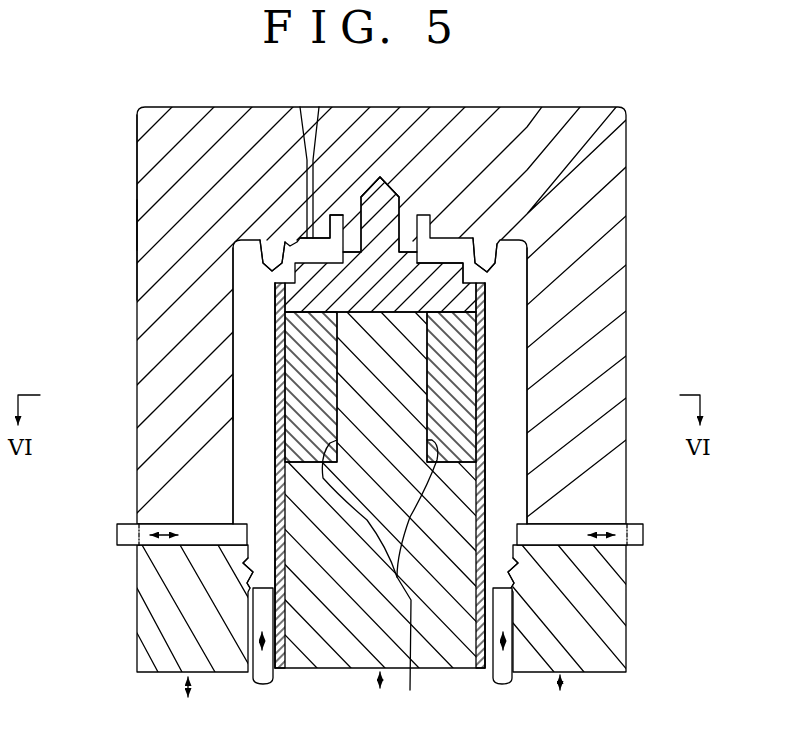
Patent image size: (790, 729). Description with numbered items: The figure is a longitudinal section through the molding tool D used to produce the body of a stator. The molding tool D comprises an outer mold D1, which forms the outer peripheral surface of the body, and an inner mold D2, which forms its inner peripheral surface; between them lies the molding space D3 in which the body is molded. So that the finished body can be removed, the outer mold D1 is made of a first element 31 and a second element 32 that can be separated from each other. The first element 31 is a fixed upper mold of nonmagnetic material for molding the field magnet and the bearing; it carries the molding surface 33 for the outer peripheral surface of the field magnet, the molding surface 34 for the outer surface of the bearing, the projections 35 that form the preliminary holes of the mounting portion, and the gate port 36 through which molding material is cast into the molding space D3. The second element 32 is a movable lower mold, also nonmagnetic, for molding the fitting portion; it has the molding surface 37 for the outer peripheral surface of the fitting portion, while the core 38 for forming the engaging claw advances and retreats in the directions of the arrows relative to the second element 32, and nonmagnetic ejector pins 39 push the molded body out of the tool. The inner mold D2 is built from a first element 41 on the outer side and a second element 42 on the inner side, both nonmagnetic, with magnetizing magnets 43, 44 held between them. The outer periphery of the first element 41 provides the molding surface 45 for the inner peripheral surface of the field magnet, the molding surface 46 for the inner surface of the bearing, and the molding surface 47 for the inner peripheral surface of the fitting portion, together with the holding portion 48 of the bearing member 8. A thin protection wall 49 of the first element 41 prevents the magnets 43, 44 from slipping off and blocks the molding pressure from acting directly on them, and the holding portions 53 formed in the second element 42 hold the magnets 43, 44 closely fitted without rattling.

The bearing member 8 is at (370, 190).
The first element 31 is at (140, 483).
The second element 32 is at (137, 610).
The molding surface 33 is at (237, 353).
The molding surface 34 is at (278, 252).
The projections 35 is at (267, 247).
The gate port 36 is at (309, 108).
The molding surface 37 is at (247, 580).
The core 38 is at (117, 535).
The ejector pins 39 is at (262, 684).
The first element 41 is at (281, 670).
The second element 42 is at (333, 666).
The magnetizing magnet 43 is at (283, 449).
The magnetizing magnet 44 is at (472, 448).
The molding surface 45 is at (273, 377).
The molding surface 46 is at (447, 258).
The molding surface 47 is at (250, 634).
The holding portion 48 is at (392, 192).
The protection wall 49 is at (480, 360).
The holding portions 53 is at (380, 577).
The molding tool D is at (110, 180).
The outer mold D1 is at (135, 245).
The inner mold D2 is at (275, 443).
The molding space D3 is at (250, 403).